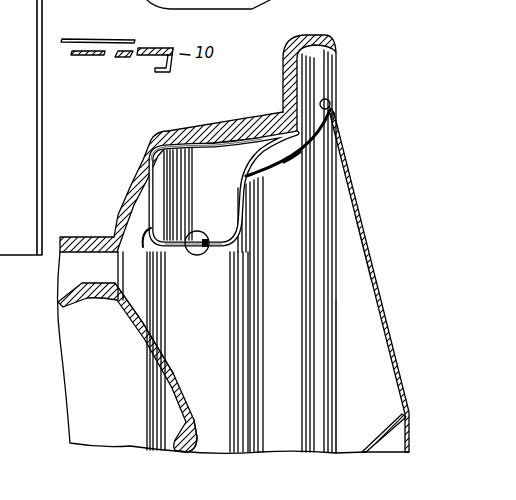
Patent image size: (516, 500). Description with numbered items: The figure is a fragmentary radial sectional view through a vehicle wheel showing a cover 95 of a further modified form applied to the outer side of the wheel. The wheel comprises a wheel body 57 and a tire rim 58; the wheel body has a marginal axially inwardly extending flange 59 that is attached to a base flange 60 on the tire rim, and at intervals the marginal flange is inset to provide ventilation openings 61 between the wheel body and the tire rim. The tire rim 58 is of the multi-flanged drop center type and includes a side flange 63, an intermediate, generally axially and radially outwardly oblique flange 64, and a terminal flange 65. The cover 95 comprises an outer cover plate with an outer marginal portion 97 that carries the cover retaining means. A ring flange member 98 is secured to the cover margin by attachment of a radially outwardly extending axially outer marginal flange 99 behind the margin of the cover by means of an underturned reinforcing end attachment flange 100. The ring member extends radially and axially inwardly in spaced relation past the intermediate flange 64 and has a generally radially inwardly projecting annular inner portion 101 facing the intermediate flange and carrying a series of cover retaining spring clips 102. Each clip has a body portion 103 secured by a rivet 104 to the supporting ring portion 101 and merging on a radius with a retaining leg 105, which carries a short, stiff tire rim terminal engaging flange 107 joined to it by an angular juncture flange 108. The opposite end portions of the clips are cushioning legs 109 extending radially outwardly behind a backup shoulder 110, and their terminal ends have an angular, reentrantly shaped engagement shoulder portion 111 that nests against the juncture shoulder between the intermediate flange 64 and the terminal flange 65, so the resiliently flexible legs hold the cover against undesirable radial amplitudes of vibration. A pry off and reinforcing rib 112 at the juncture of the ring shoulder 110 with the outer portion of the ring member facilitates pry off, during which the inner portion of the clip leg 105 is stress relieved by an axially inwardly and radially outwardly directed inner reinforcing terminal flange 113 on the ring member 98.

The wheel body 57 is at (197, 407).
The tire rim 58 is at (83, 232).
The marginal axially inwardly extending flange 59 is at (68, 328).
The base flange 60 is at (98, 246).
The ventilation openings 61 is at (103, 272).
The side flange 63 is at (143, 185).
The intermediate flange 64 is at (241, 126).
The terminal flange 65 is at (318, 42).
The cover 95 is at (377, 273).
The outer marginal portion 97 is at (356, 192).
The ring flange member 98 is at (336, 364).
The axially outer marginal flange 99 is at (333, 117).
The underturned reinforcing end attachment flange 100 is at (322, 100).
The annular inner portion 101 is at (190, 338).
The cover retaining spring clips 102 is at (147, 211).
The body portion 103 is at (175, 257).
The rivet 104 is at (200, 231).
The retaining leg 105 is at (160, 198).
The tire rim terminal engaging flange 107 is at (206, 142).
The angular juncture flange 108 is at (186, 156).
The cushioning legs 109 is at (262, 184).
The backup shoulder 110 is at (247, 205).
The engagement shoulder portion 111 is at (290, 165).
The pry off and reinforcing rib 112 is at (251, 293).
The inner reinforcing terminal flange 113 is at (147, 273).